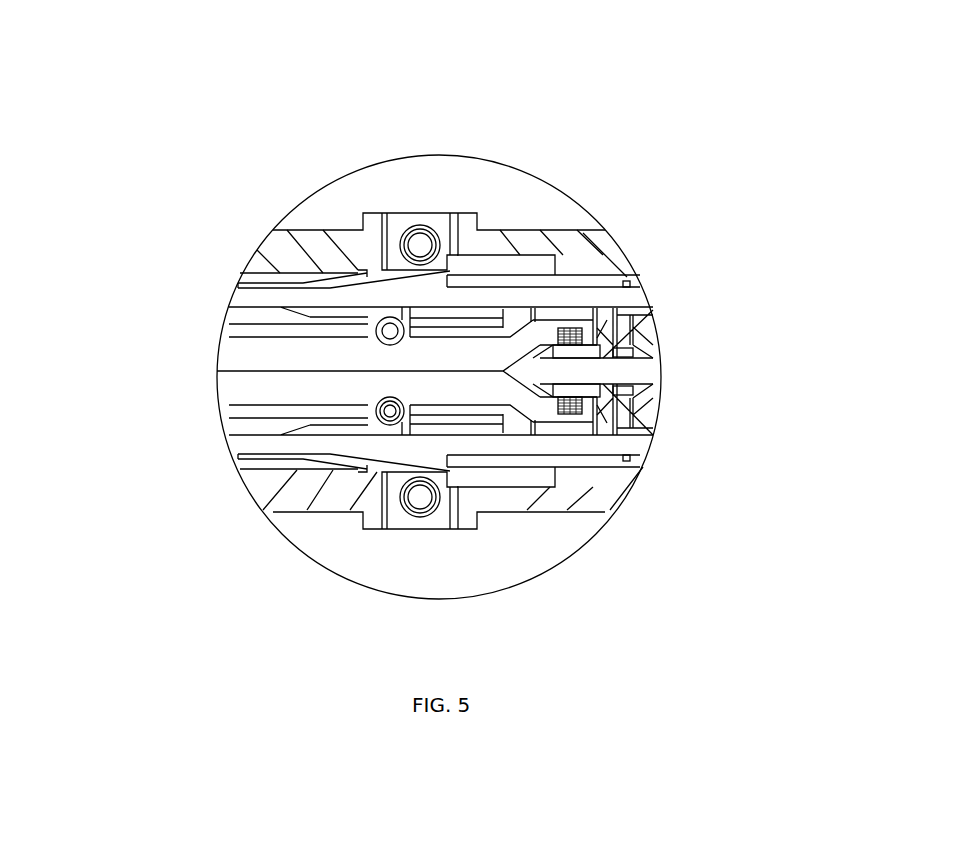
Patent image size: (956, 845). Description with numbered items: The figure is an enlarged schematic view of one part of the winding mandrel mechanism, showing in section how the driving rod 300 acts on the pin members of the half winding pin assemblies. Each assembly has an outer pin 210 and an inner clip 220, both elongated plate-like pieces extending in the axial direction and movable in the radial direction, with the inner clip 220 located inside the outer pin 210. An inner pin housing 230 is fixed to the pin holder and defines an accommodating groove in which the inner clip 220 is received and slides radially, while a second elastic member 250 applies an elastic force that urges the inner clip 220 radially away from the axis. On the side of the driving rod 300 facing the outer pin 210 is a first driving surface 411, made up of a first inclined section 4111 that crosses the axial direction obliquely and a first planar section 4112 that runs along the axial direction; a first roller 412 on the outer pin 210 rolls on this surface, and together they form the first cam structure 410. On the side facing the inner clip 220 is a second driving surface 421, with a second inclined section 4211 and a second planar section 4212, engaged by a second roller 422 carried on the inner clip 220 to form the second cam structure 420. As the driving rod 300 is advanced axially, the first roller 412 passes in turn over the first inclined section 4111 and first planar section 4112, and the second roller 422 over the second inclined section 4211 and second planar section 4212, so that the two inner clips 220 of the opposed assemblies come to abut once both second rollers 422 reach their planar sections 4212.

The outer pin 210 is at (320, 250).
The inner clip 220 is at (255, 362).
The inner pin housing 230 is at (625, 262).
The second elastic member 250 is at (647, 300).
The driving rod 300 is at (607, 222).
The first cam structure 410 is at (647, 97).
The first driving surface 411 is at (523, 60).
The first inclined section 4111 is at (240, 280).
The first planar section 4112 is at (395, 317).
The first roller 412 is at (560, 300).
The second cam structure 420 is at (302, 635).
The second driving surface 421 is at (203, 587).
The second inclined section 4211 is at (300, 370).
The second planar section 4212 is at (357, 320).
The second roller 422 is at (392, 420).